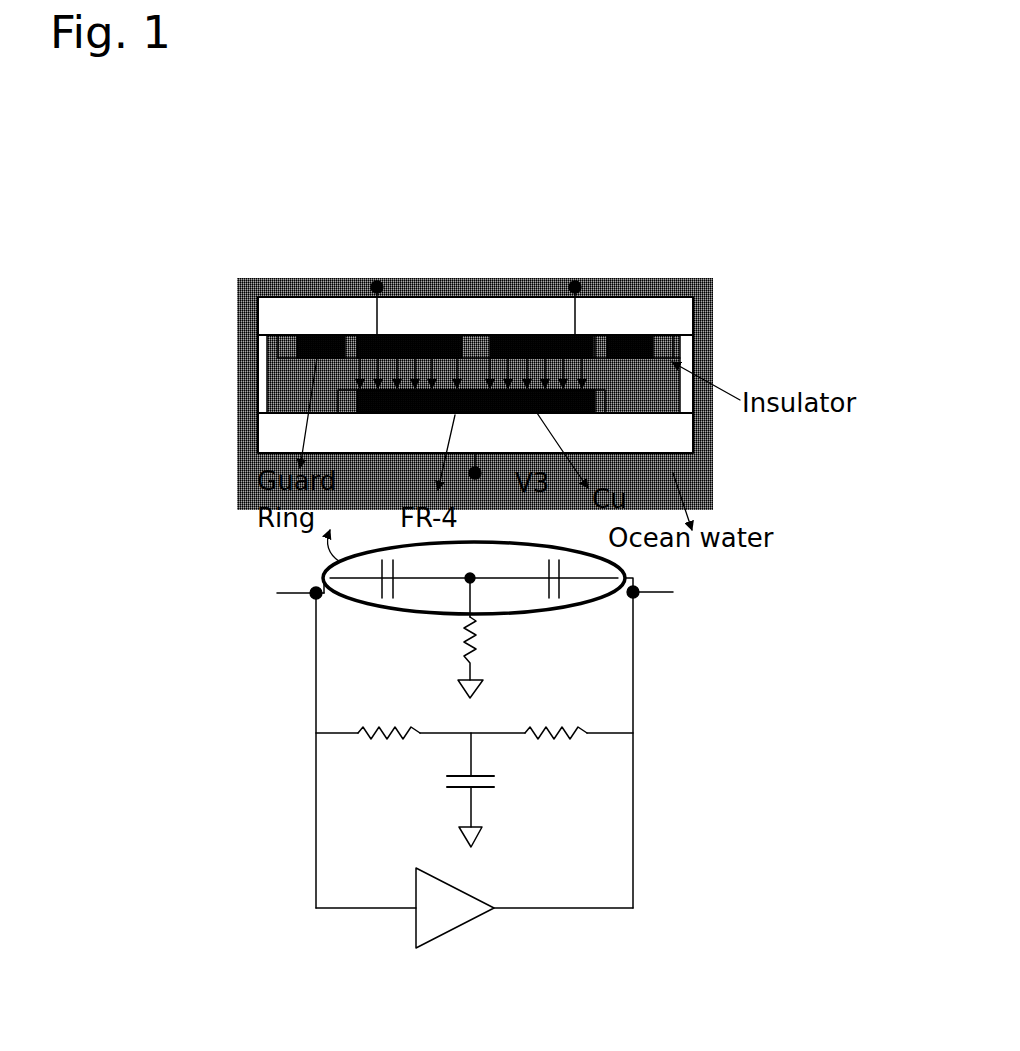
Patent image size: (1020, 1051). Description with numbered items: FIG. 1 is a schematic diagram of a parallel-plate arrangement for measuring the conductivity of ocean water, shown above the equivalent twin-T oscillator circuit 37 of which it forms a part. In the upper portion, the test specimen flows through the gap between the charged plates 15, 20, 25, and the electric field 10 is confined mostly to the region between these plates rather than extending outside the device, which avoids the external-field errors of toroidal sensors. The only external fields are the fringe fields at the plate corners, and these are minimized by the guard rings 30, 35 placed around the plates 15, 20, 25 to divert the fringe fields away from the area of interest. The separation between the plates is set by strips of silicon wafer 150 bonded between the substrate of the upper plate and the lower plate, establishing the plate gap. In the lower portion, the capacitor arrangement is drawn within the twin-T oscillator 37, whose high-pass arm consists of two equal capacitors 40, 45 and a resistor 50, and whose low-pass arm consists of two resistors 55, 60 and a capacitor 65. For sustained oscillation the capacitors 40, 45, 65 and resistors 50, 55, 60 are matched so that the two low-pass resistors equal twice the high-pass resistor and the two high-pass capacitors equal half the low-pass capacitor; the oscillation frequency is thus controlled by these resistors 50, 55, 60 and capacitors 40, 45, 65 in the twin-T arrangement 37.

The electric field 10 is at (283, 388).
The charged plate 15 is at (403, 335).
The charged plate 20 is at (513, 335).
The charged plate 25 is at (568, 413).
The guard ring 30 is at (300, 349).
The guard ring 35 is at (653, 345).
The strips of silicon wafer 150 is at (258, 375).
The twin-T oscillator circuit 37 is at (794, 731).
The capacitor 40 is at (560, 590).
The capacitor 45 is at (385, 598).
The resistor 50 is at (470, 647).
The resistor 55 is at (372, 733).
The resistor 60 is at (580, 735).
The capacitor 65 is at (457, 790).